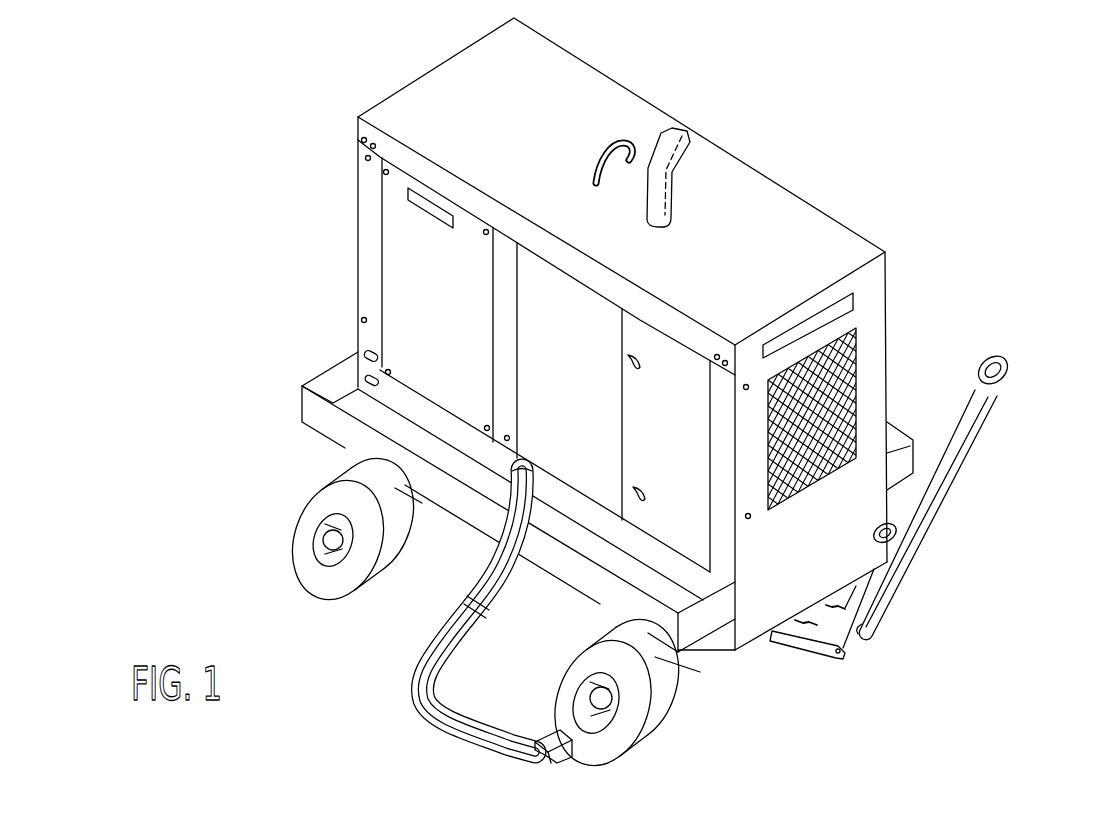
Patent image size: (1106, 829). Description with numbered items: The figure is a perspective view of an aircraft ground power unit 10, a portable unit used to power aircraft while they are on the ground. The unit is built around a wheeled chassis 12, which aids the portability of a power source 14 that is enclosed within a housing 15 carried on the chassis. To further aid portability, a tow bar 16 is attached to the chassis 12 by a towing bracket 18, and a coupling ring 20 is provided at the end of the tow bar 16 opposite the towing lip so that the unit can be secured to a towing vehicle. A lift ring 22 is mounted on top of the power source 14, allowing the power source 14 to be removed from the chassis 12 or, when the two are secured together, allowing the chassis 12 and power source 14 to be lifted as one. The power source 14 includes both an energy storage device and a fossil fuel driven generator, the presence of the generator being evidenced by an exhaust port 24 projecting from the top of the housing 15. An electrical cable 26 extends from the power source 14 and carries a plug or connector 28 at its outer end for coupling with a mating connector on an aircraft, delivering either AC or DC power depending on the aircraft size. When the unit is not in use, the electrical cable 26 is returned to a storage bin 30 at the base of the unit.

The aircraft ground power unit 10 is at (849, 92).
The wheeled chassis 12 is at (314, 452).
The power source 14 is at (353, 213).
The housing 15 is at (416, 313).
The tow bar 16 is at (977, 447).
The towing bracket 18 is at (805, 662).
The coupling ring 20 is at (1005, 355).
The lift ring 22 is at (586, 160).
The exhaust port 24 is at (683, 134).
The electrical cable 26 is at (414, 644).
The plug or connector 28 is at (553, 734).
The storage bin 30 is at (310, 362).